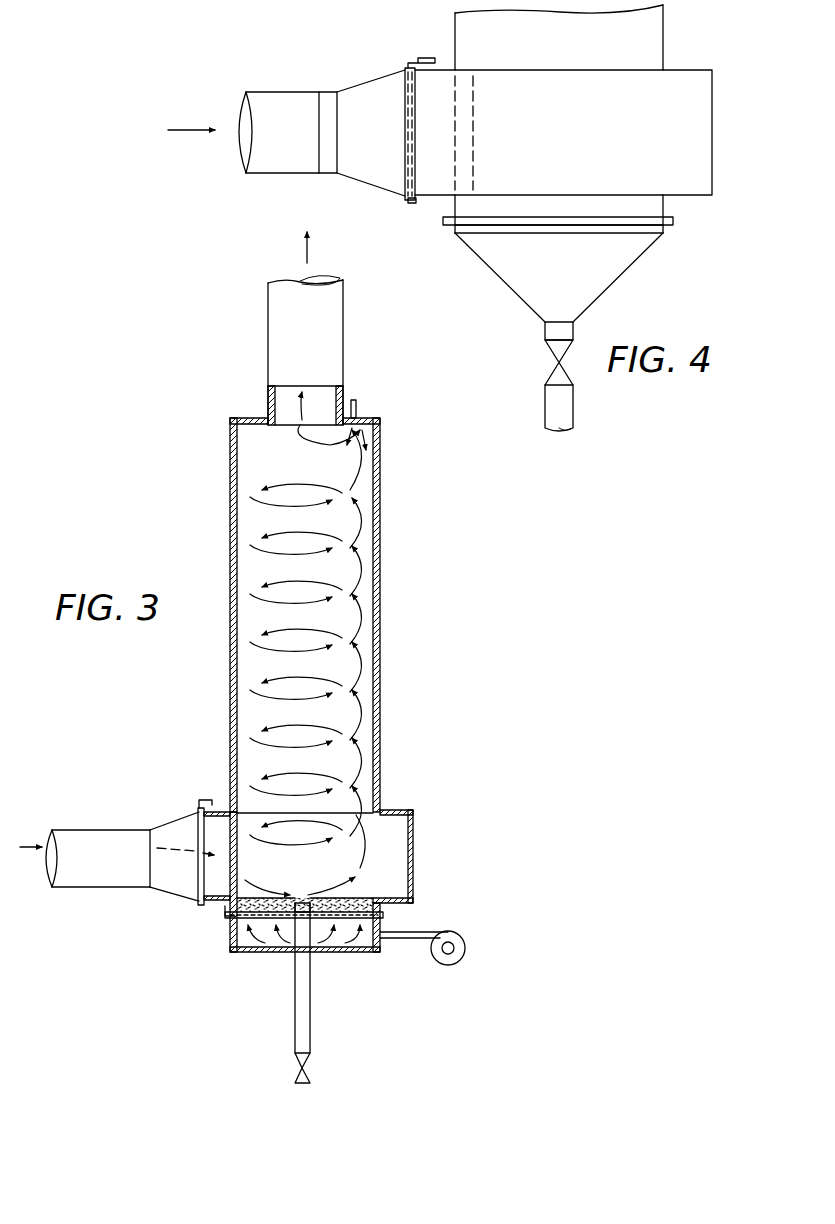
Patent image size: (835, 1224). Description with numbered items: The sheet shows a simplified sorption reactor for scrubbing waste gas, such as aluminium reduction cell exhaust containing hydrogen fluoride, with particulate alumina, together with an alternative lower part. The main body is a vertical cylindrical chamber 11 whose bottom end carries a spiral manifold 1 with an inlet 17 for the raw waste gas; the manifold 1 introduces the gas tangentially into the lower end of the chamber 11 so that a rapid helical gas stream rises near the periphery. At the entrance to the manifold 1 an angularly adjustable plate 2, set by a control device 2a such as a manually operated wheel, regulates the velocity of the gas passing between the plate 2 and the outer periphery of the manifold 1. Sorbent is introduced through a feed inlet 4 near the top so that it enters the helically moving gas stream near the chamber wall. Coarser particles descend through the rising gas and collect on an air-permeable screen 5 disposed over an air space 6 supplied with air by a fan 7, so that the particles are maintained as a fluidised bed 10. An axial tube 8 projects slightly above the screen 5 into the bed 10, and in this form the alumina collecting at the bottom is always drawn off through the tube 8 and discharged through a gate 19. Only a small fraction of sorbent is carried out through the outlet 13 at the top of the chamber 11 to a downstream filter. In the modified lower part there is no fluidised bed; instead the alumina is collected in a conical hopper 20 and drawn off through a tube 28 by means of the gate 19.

In FIG. 3, the spiral manifold 1 is at (414, 815).
In FIG. 4, the spiral manifold 1 is at (713, 115).
In FIG. 3, the angularly adjustable plate 2 is at (213, 835).
In FIG. 4, the angularly adjustable plate 2 is at (425, 112).
In FIG. 3, the control device 2a is at (206, 800).
In FIG. 4, the control device 2a is at (416, 60).
In FIG. 3, the feed inlet 4 is at (358, 402).
In FIG. 3, the air-permeable screen 5 is at (356, 914).
In FIG. 3, the air space 6 is at (343, 945).
In FIG. 3, the fan 7 is at (456, 933).
In FIG. 3, the axial tube 8 is at (298, 925).
In FIG. 3, the fluidised bed 10 is at (226, 908).
In FIG. 3, the vertical cylindrical chamber 11 is at (380, 572).
In FIG. 4, the vertical cylindrical chamber 11 is at (664, 28).
In FIG. 3, the outlet 13 is at (344, 312).
In FIG. 3, the inlet 17 is at (74, 830).
In FIG. 4, the inlet 17 is at (326, 92).
In FIG. 3, the gate 19 is at (305, 1068).
In FIG. 4, the gate 19 is at (553, 368).
In FIG. 4, the conical hopper 20 is at (623, 277).
In FIG. 4, the tube 28 is at (574, 410).